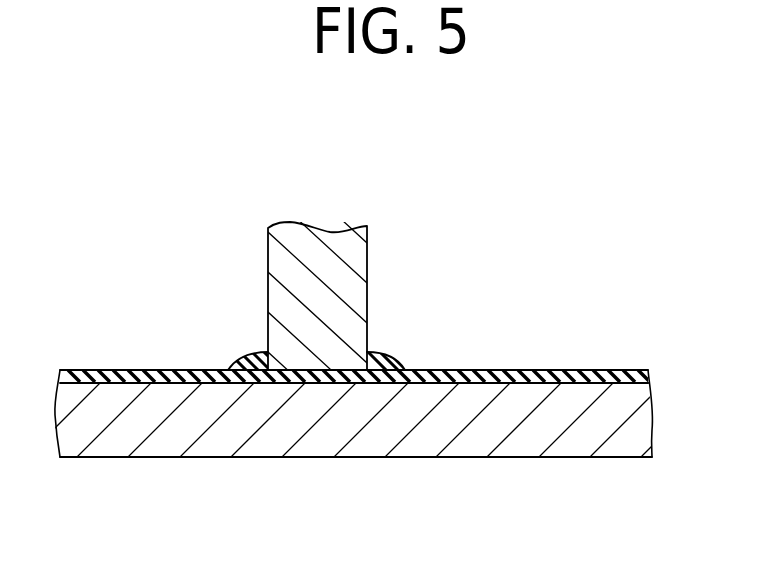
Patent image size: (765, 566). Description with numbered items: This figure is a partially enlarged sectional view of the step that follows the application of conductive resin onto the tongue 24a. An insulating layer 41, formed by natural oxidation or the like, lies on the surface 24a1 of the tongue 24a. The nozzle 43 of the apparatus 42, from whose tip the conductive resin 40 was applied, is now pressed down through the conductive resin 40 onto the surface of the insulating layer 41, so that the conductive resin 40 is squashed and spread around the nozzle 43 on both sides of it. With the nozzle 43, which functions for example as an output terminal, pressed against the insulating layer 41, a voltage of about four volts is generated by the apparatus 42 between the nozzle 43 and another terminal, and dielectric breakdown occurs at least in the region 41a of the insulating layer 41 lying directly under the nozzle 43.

The tongue 24a is at (485, 418).
The surface of the tongue 24a1 is at (583, 372).
The conductive resin 40 is at (255, 358).
The insulating layer 41 is at (125, 370).
The region of the insulating layer 41a is at (318, 375).
The apparatus 42 is at (410, 217).
The nozzle 43 is at (323, 255).